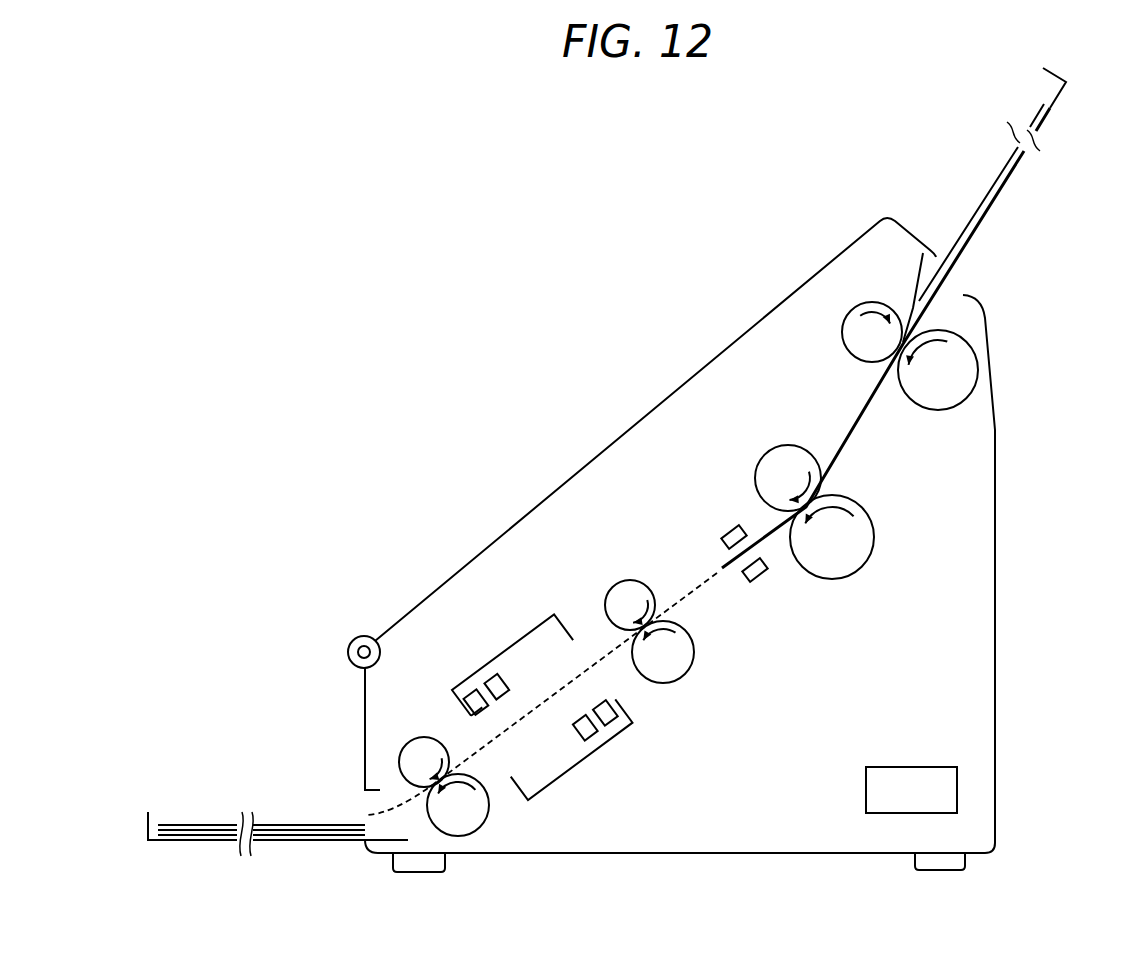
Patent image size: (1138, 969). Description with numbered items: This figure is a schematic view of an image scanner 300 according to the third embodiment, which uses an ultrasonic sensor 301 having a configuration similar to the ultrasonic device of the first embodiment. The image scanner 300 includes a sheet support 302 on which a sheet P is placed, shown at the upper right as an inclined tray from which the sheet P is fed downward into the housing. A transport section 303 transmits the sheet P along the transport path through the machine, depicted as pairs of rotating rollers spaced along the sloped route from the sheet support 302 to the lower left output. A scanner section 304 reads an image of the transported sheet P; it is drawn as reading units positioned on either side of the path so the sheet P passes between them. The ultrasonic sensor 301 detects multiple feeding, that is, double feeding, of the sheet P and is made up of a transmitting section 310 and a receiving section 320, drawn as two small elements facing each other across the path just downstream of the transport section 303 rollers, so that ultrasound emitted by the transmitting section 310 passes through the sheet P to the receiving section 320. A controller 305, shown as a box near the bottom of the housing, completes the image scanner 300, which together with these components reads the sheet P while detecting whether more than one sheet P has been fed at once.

The image scanner 300 is at (504, 374).
The ultrasonic sensor 301 is at (742, 514).
The sheet support 302 is at (1053, 110).
The transport section 303 is at (903, 524).
The scanner section 304 is at (598, 778).
The controller 305 is at (936, 790).
The transmitting section 310 is at (723, 530).
The receiving section 320 is at (765, 577).
The sheet P is at (980, 215).